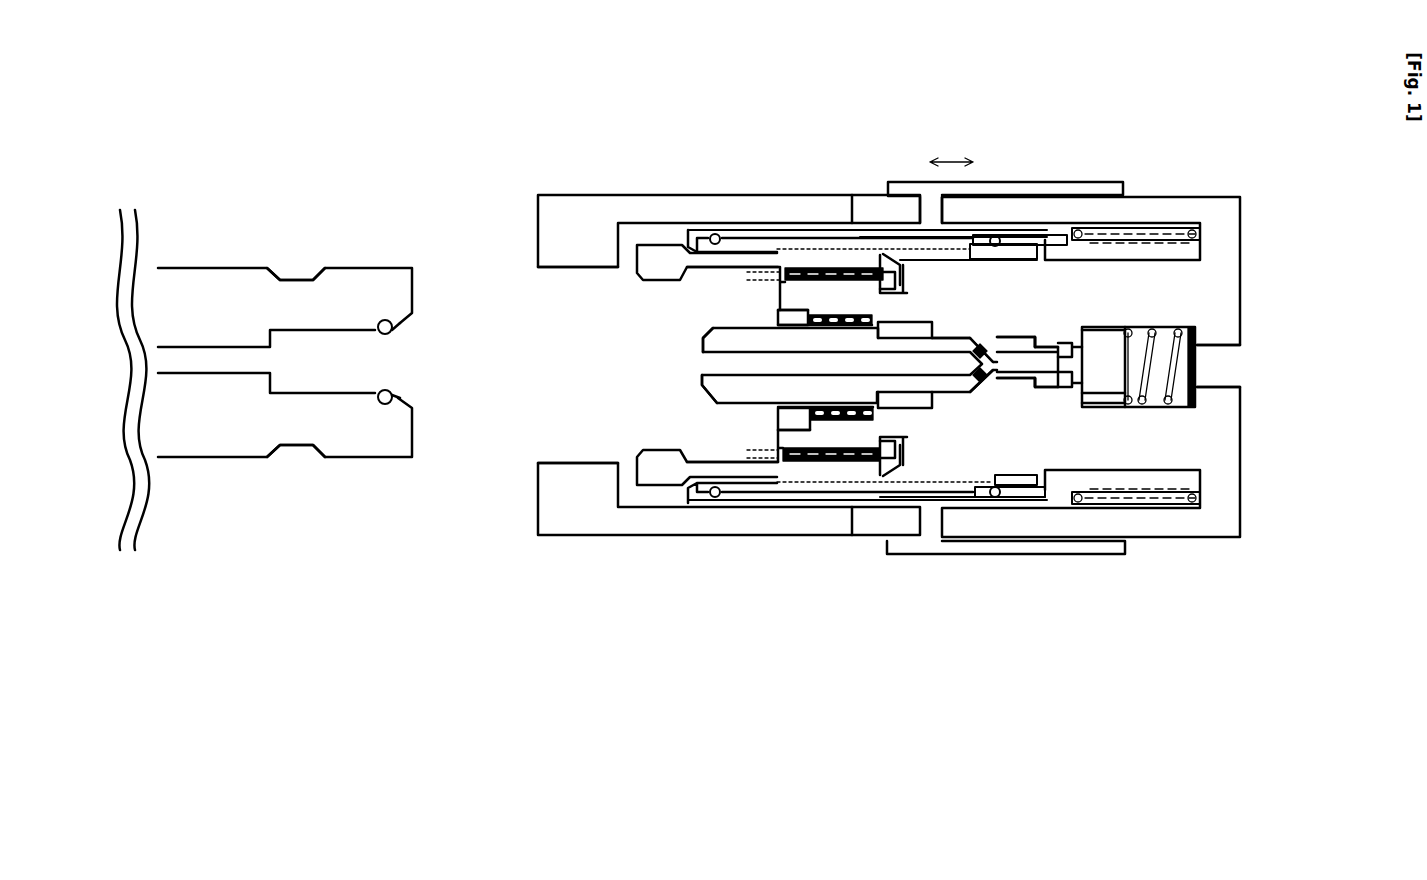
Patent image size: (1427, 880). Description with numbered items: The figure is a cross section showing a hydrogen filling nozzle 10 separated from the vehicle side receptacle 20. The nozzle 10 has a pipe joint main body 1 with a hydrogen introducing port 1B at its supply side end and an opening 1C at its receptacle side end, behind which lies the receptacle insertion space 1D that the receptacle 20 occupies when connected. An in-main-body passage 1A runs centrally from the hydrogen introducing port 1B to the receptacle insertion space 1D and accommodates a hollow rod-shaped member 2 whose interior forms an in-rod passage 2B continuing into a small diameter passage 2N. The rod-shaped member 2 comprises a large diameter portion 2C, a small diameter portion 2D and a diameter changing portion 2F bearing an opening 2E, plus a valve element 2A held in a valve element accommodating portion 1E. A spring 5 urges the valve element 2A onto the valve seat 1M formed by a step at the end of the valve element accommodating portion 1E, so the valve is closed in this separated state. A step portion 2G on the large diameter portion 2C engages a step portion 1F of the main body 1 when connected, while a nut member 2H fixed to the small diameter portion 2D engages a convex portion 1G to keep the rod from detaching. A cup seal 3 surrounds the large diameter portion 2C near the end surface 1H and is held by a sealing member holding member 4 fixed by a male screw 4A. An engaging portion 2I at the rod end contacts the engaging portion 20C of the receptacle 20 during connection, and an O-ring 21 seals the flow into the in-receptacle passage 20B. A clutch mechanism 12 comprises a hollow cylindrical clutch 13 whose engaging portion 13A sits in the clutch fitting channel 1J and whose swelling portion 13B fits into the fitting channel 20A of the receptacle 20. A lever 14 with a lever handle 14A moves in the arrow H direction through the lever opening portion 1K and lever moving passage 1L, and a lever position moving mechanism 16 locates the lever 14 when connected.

The pipe joint main body 1 is at (1232, 245).
The in-main-body passage 1A is at (1043, 345).
The hydrogen introducing port 1B is at (1225, 383).
The opening 1C is at (588, 270).
The receptacle insertion space 1D is at (560, 408).
The valve element accommodating portion 1E is at (1160, 347).
The step portion 1F is at (932, 332).
The convex portion 1G is at (1033, 347).
The end surface 1H is at (772, 295).
The clutch fitting channel 1J is at (902, 292).
The lever opening portion 1K is at (935, 207).
The lever moving passage 1L is at (1048, 232).
The valve seat 1M is at (1082, 393).
The rod-shaped member 2 is at (710, 382).
The valve element 2A is at (1107, 350).
The in-rod passage 2B is at (907, 367).
The large diameter portion 2C is at (748, 392).
The small diameter portion 2D is at (1018, 368).
The opening 2E is at (1003, 322).
The diameter changing portion 2F is at (968, 340).
The step portion 2G is at (903, 325).
The nut member 2H is at (1060, 388).
The engaging portion 2I is at (706, 333).
The small diameter passage 2N is at (1043, 385).
The sealing member 3 is at (843, 297).
The sealing member holding member 4 is at (775, 322).
The male screw 4A is at (798, 302).
The spring 5 is at (1183, 403).
The filling nozzle 10 is at (1178, 173).
The clutch mechanism 12 is at (720, 175).
The clutch 13 is at (748, 263).
The engaging portion 13A is at (907, 269).
The swelling portion 13B is at (655, 263).
The lever 14 is at (828, 233).
The lever handle 14A is at (1082, 188).
The lever position moving mechanism 16 is at (945, 475).
The receptacle 20 is at (385, 268).
The fitting channel 20A is at (282, 267).
The in-receptacle passage 20B is at (302, 372).
The engaging portion 20C is at (402, 322).
The O-ring 21 is at (393, 333).